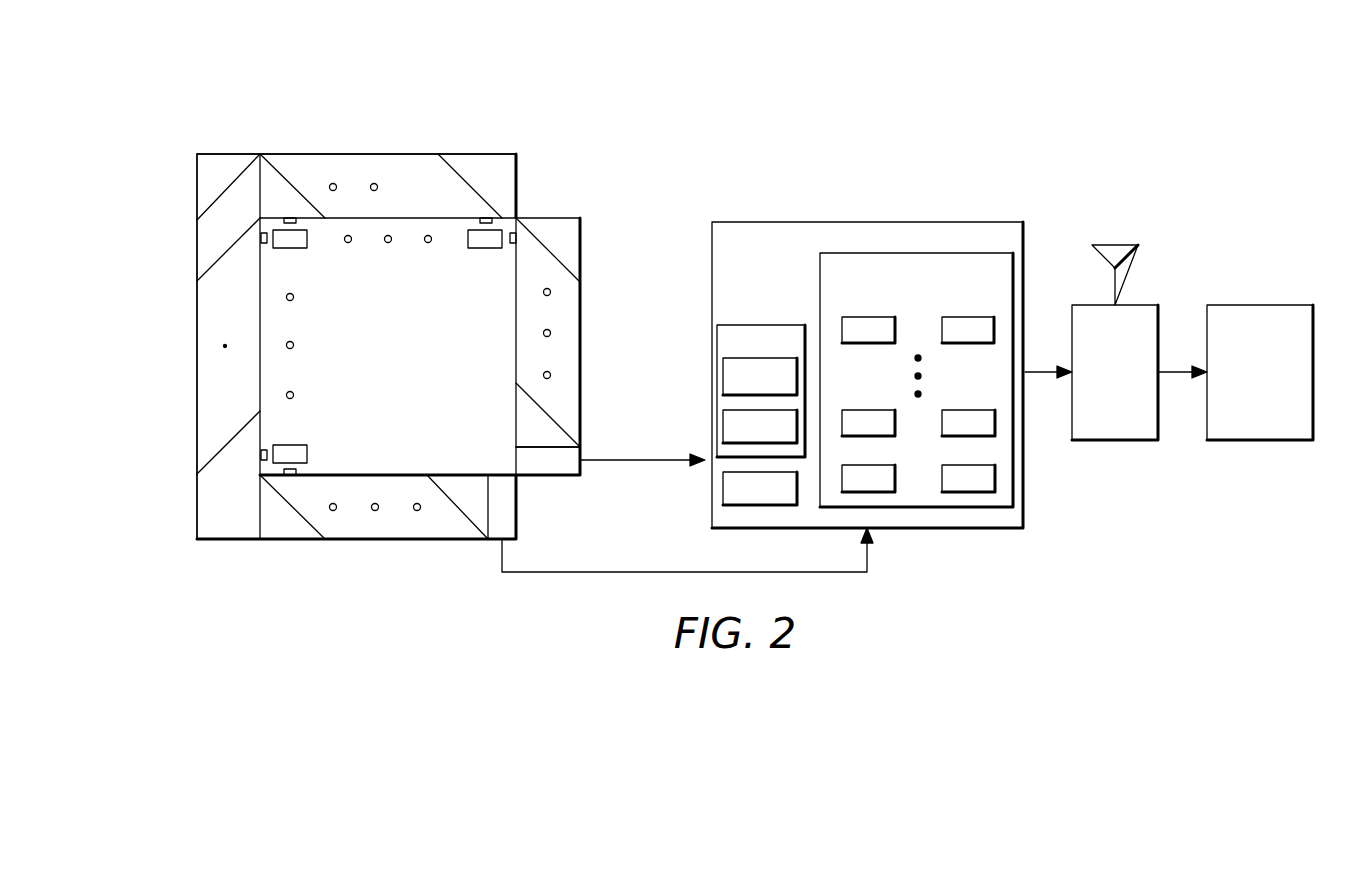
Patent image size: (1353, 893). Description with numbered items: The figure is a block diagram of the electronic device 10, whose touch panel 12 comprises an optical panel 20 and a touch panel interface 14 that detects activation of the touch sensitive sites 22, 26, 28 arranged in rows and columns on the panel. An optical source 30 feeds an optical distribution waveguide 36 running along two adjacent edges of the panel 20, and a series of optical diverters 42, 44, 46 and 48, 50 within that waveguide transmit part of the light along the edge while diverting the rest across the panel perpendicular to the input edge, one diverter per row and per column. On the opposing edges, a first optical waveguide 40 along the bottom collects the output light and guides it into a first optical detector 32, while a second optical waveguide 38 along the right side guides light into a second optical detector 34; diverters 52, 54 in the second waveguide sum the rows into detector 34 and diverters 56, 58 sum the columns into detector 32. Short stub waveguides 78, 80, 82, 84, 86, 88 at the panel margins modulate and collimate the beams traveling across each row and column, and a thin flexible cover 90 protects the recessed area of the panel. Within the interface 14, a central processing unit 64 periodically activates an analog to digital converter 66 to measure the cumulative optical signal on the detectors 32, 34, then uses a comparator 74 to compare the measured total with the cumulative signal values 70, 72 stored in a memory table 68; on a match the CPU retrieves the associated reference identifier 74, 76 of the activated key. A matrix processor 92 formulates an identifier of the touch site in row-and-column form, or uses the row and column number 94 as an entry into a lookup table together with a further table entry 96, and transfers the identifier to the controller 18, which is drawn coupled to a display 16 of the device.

The electronic device 10 is at (1250, 82).
The touch panel 12 is at (656, 108).
The touch panel interface 14 is at (925, 222).
The display 16 is at (1300, 305).
The controller 18 is at (1145, 305).
The optical panel 20 is at (158, 464).
The touch sensitive site 22 is at (307, 237).
The touch sensitive site 26 is at (302, 445).
The touch sensitive site 28 is at (468, 238).
The optical source 30 is at (228, 542).
The first optical detector 32 is at (518, 515).
The second optical detector 34 is at (563, 482).
The optical distribution waveguide 36 is at (360, 154).
The second optical waveguide 38 is at (581, 310).
The first optical waveguide 40 is at (401, 542).
The optical diverter 42 is at (245, 423).
The optical diverter 44 is at (206, 262).
The optical diverter 46 is at (215, 197).
The optical diverter 48 is at (303, 196).
The optical diverter 50 is at (468, 178).
The optical diverter 52 is at (545, 252).
The optical diverter 54 is at (547, 415).
The optical diverter 56 is at (458, 512).
The optical diverter 58 is at (288, 500).
The central processing unit 64 is at (717, 341).
The analog to digital converter 66 is at (723, 489).
The table 68 is at (963, 253).
The cumulative signal value 70 is at (868, 317).
The cumulative signal value 72 is at (868, 410).
The comparator 74 is at (723, 377).
The reference identifier 76 is at (965, 410).
The stub waveguide 78 is at (265, 445).
The stub waveguide 80 is at (262, 238).
The stub waveguide 82 is at (288, 217).
The stub waveguide 84 is at (485, 217).
The stub waveguide 86 is at (515, 248).
The stub waveguide 88 is at (297, 472).
The thin flexible cover 90 is at (402, 477).
The matrix processor 92 is at (723, 429).
The row and column number 94 is at (868, 465).
The alarm register 96 is at (965, 465).